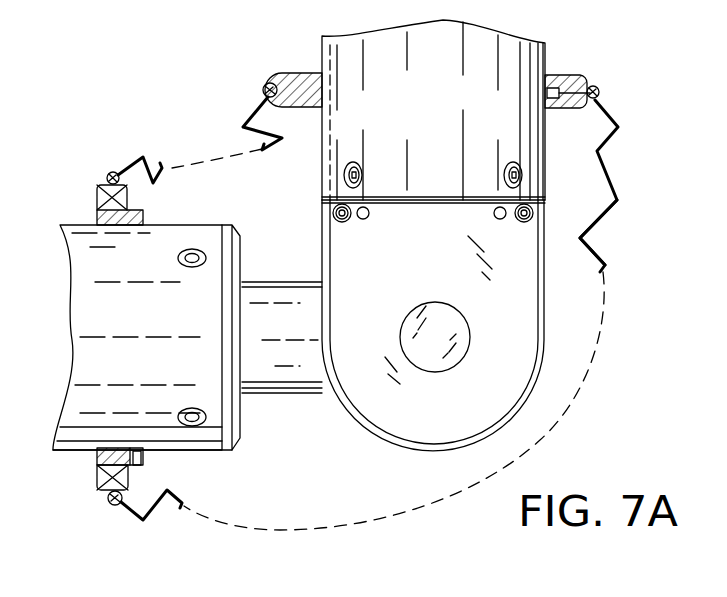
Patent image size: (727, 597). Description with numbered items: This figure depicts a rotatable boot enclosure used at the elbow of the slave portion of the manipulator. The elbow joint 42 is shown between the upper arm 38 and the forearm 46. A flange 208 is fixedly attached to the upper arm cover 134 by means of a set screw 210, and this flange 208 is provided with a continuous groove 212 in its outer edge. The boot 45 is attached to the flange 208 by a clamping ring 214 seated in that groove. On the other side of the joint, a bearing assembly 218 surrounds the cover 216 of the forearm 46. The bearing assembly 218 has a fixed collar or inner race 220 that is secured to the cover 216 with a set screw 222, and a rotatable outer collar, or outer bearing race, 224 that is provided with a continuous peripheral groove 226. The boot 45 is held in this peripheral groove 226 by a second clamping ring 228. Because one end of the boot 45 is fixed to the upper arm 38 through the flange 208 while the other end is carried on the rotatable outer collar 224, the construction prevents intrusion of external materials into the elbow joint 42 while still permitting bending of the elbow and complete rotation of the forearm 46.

The upper arm 38 is at (545, 55).
The elbow joint 42 is at (605, 316).
The boot 45 is at (604, 214).
The forearm 46 is at (72, 452).
The upper arm cover 134 is at (443, 162).
The flange 208 is at (576, 75).
The set screw 210 is at (598, 152).
The continuous groove 212 is at (277, 72).
The clamping ring 214 is at (263, 88).
The cover 216 is at (126, 326).
The bearing assembly 218 is at (95, 196).
The fixed collar 220 is at (97, 218).
The set screw 222 is at (140, 463).
The rotatable outer collar 224 is at (108, 176).
The continuous peripheral groove 226 is at (100, 493).
The second clamping ring 228 is at (118, 172).